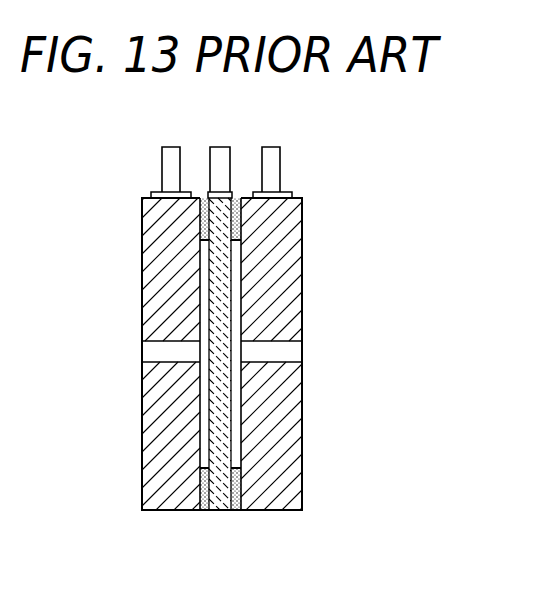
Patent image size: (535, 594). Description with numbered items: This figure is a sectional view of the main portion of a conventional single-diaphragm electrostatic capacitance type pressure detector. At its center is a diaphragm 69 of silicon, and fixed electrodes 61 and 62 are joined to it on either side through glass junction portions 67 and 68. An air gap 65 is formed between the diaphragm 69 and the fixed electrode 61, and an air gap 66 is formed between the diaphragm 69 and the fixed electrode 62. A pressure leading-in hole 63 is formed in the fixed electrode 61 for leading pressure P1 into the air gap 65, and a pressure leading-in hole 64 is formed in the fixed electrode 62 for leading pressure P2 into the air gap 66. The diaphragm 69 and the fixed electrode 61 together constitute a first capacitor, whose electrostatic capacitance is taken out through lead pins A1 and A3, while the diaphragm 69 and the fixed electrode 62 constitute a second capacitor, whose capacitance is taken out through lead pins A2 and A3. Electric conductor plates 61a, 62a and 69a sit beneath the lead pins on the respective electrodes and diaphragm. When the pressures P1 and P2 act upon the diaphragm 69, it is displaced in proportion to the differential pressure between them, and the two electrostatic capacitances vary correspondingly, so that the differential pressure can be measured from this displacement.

The fixed electrode 61 is at (296, 354).
The fixed electrode 62 is at (146, 272).
The electric conductor plate 61a is at (290, 192).
The electric conductor plate 62a is at (152, 192).
The pressure leading-in hole 63 is at (272, 370).
The pressure leading-in hole 64 is at (158, 368).
The air gap 65 is at (240, 413).
The air gap 66 is at (200, 432).
The glass junction portion 67 is at (238, 222).
The glass junction portion 68 is at (200, 222).
The diaphragm 69 is at (219, 492).
The electric conductor plate 69a is at (231, 191).
The lead pin A1 is at (271, 157).
The lead pin A2 is at (169, 157).
The lead pin A3 is at (219, 157).
The pressure P1 is at (322, 352).
The pressure P2 is at (118, 352).